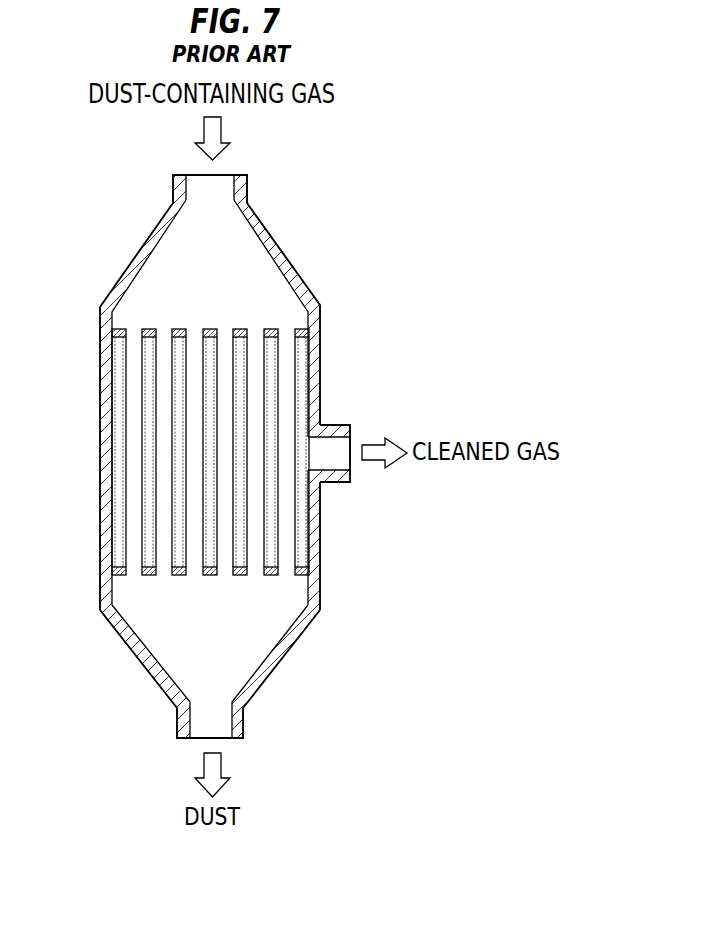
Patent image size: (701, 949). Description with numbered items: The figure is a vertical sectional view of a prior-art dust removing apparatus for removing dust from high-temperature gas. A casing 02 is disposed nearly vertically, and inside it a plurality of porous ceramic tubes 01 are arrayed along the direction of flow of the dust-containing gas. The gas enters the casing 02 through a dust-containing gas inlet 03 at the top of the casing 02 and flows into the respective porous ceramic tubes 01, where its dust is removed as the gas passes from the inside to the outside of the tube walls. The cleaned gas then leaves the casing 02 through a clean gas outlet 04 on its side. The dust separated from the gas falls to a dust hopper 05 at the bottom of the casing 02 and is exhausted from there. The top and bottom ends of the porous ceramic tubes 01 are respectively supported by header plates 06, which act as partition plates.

The porous ceramic tubes 01 is at (283, 393).
The casing 02 is at (288, 262).
The dust-containing gas inlet 03 is at (173, 191).
The clean gas outlet 04 is at (333, 425).
The dust hopper 05 is at (284, 665).
The header plates 06 is at (273, 330).